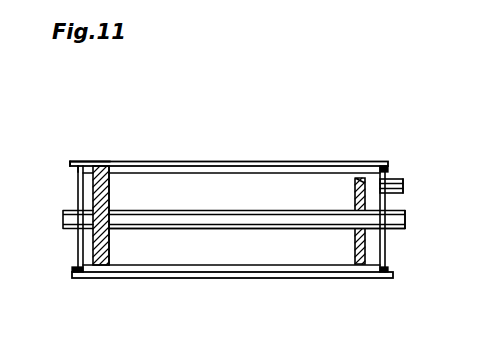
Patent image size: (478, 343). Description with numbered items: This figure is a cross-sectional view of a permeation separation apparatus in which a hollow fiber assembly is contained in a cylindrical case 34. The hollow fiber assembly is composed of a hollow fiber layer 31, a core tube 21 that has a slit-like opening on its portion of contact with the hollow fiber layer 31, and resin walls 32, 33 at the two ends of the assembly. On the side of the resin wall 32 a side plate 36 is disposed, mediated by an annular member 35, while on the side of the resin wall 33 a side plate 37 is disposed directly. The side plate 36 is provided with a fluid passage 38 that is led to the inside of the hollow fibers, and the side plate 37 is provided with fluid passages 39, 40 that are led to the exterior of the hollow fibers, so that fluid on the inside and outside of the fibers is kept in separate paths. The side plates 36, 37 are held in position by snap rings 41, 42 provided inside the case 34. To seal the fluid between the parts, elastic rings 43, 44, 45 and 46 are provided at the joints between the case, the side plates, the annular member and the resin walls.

The core tube 21 is at (198, 232).
The hollow fiber layer 31 is at (258, 250).
The resin wall 32 is at (105, 240).
The resin wall 33 is at (362, 265).
The cylindrical case 34 is at (232, 162).
The annular member 35 is at (86, 266).
The side plate 36 is at (74, 226).
The side plate 37 is at (388, 273).
The fluid passage 38 is at (63, 212).
The fluid passage 39 is at (405, 192).
The fluid passage 40 is at (405, 232).
The snap ring 41 is at (75, 166).
The snap ring 42 is at (392, 176).
The elastic ring 43 is at (81, 162).
The elastic ring 44 is at (103, 167).
The elastic ring 45 is at (383, 166).
The elastic ring 46 is at (404, 182).